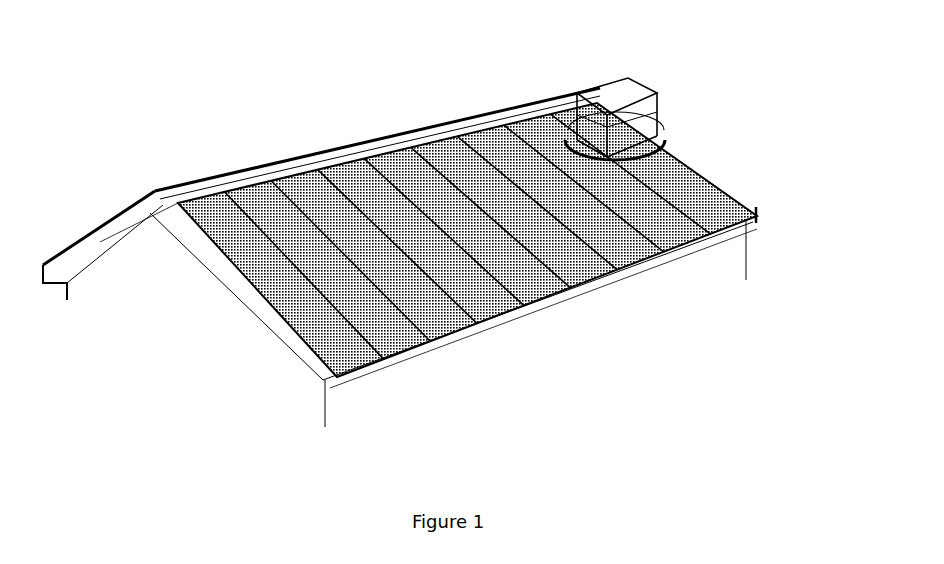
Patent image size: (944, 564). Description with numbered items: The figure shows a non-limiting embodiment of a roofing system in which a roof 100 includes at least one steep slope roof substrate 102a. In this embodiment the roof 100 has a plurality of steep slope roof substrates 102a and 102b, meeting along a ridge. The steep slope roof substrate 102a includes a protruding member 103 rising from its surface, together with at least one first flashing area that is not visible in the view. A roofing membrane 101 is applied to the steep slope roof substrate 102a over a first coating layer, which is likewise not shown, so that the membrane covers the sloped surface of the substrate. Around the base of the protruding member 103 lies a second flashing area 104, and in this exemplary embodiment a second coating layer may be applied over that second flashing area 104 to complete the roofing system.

The roof 100 is at (196, 106).
The roofing membrane 101 is at (423, 302).
The steep slope roof substrate 102a is at (373, 168).
The steep slope roof substrate 102b is at (108, 222).
The protruding member 103 is at (605, 82).
The second flashing area 104 is at (630, 167).